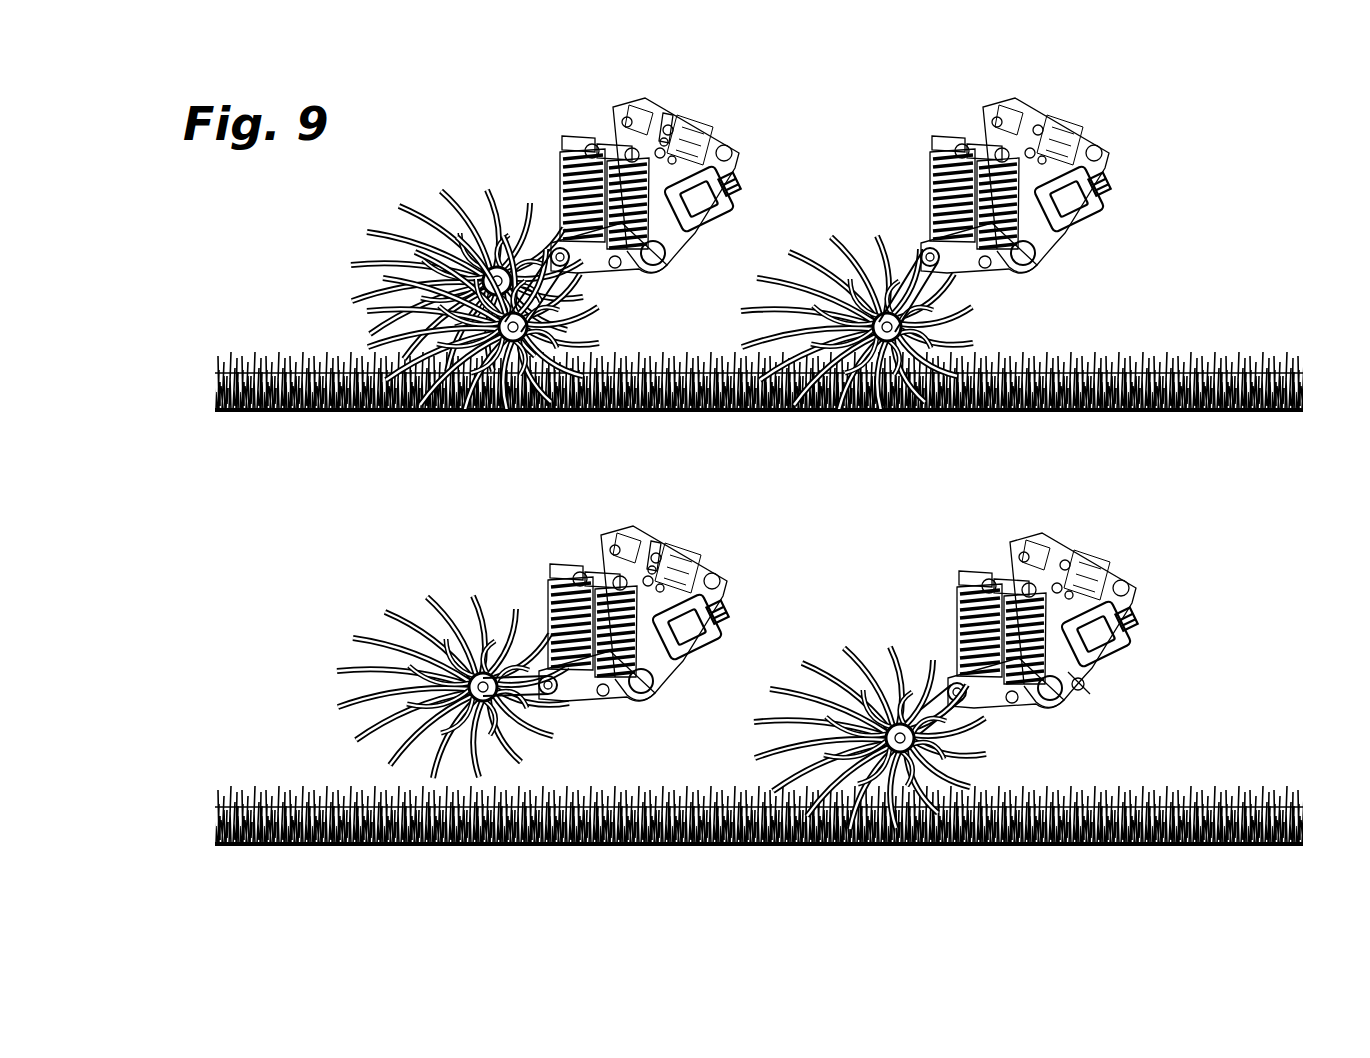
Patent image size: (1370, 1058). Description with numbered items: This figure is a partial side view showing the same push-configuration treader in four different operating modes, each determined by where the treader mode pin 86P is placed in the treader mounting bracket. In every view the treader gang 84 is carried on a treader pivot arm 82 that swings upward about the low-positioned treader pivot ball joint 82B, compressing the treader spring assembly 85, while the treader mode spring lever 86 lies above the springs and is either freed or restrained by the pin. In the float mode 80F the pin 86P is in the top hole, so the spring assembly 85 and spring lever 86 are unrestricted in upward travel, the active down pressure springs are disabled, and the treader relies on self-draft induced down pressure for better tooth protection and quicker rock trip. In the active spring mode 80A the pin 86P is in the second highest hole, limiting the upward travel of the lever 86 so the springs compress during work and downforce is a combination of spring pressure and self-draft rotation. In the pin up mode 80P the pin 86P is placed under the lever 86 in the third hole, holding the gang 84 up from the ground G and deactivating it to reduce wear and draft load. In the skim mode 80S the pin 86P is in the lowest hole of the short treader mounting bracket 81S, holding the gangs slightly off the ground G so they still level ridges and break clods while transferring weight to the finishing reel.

The treader mode float 80F is at (479, 324).
The treader mode active spring 80A is at (877, 427).
The treader mode pin up 80P is at (469, 660).
The treader mode skim 80S is at (1051, 636).
The treader mounting bracket short 81S is at (1082, 684).
The treader pivot arm 82 is at (1007, 288).
The treader pivot ball joint 82B is at (998, 270).
The treader gang 84 is at (362, 610).
The treader spring assembly 85 is at (940, 188).
The treader mode spring lever 86 is at (937, 136).
The treader mode pin 86P is at (668, 118).
The ground G is at (897, 413).